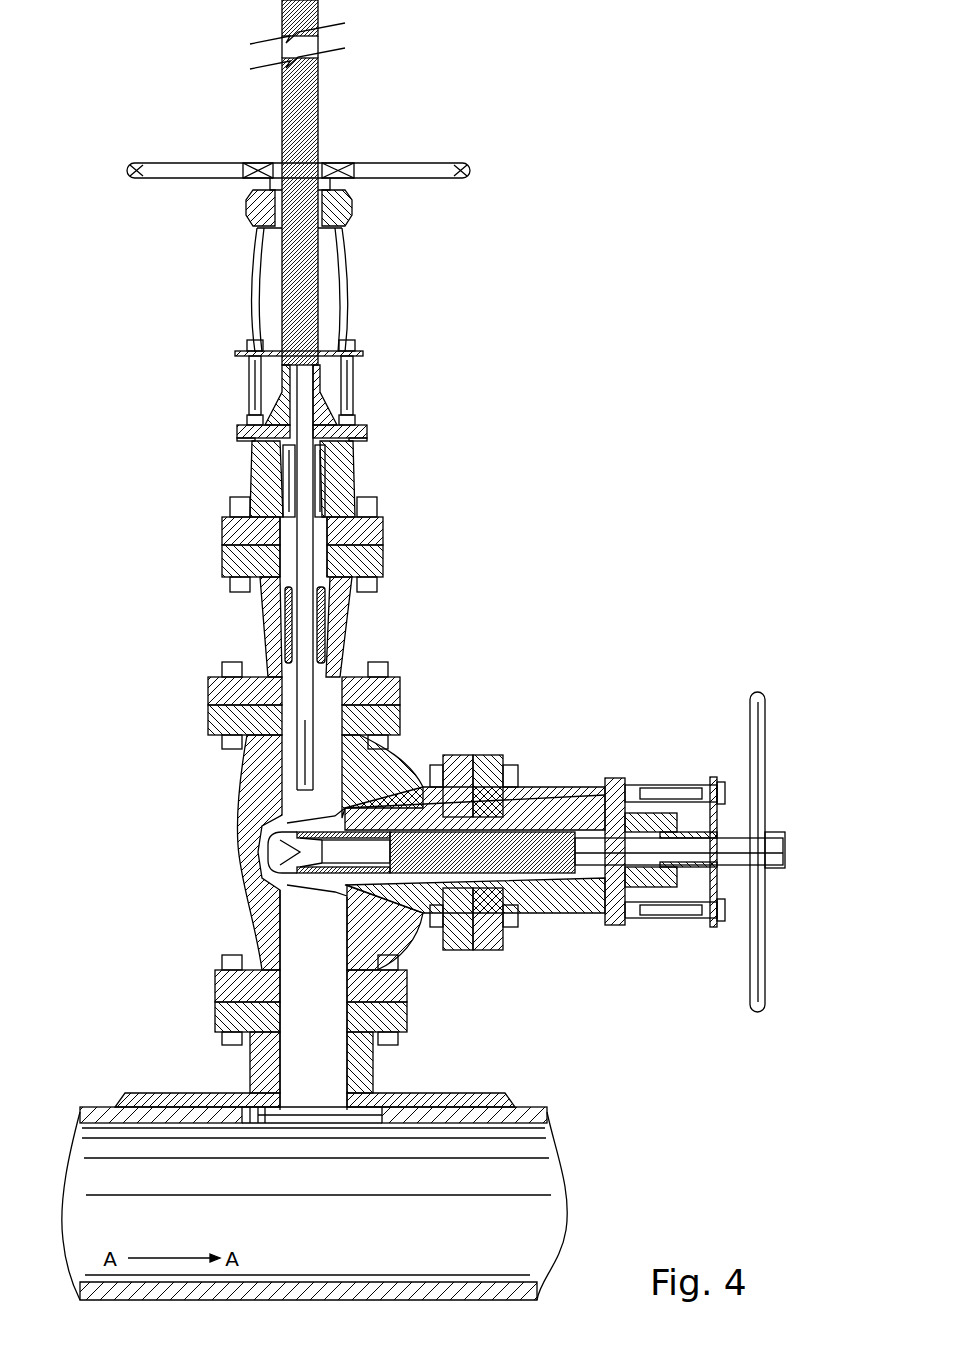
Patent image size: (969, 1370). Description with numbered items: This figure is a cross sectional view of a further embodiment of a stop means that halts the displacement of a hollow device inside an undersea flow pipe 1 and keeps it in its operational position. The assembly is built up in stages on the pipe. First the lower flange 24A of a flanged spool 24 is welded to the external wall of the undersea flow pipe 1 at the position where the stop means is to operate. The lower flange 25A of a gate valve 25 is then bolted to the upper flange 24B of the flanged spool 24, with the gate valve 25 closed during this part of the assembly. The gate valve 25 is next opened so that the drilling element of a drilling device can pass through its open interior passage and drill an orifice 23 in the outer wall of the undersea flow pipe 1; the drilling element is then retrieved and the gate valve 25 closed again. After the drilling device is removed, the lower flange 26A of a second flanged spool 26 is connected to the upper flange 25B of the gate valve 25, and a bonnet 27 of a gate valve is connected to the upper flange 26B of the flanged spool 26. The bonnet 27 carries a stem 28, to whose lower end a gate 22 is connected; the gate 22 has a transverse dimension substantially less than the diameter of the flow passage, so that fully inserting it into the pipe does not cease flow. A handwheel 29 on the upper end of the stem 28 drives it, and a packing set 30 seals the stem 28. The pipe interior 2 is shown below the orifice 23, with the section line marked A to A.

The undersea flow pipe 1 is at (540, 1113).
The pipe 2 is at (520, 1219).
The gate 22 is at (318, 695).
The orifice 23 is at (320, 1116).
The flanged spool 24 is at (375, 1063).
The lower flange of flanged spool 24A is at (165, 1101).
The upper flange of flanged spool 24B is at (226, 1017).
The gate valve 25 is at (398, 797).
The lower flange of gate valve 25A is at (236, 990).
The upper flange of gate valve 25B is at (225, 722).
The flanged spool 26 is at (270, 633).
The lower flange of flanged spool 26A is at (385, 692).
The upper flange of flanged spool 26B is at (365, 563).
The bonnet 27 is at (340, 470).
The stem 28 is at (290, 485).
The handwheel 29 is at (184, 180).
The packing set 30 is at (330, 408).